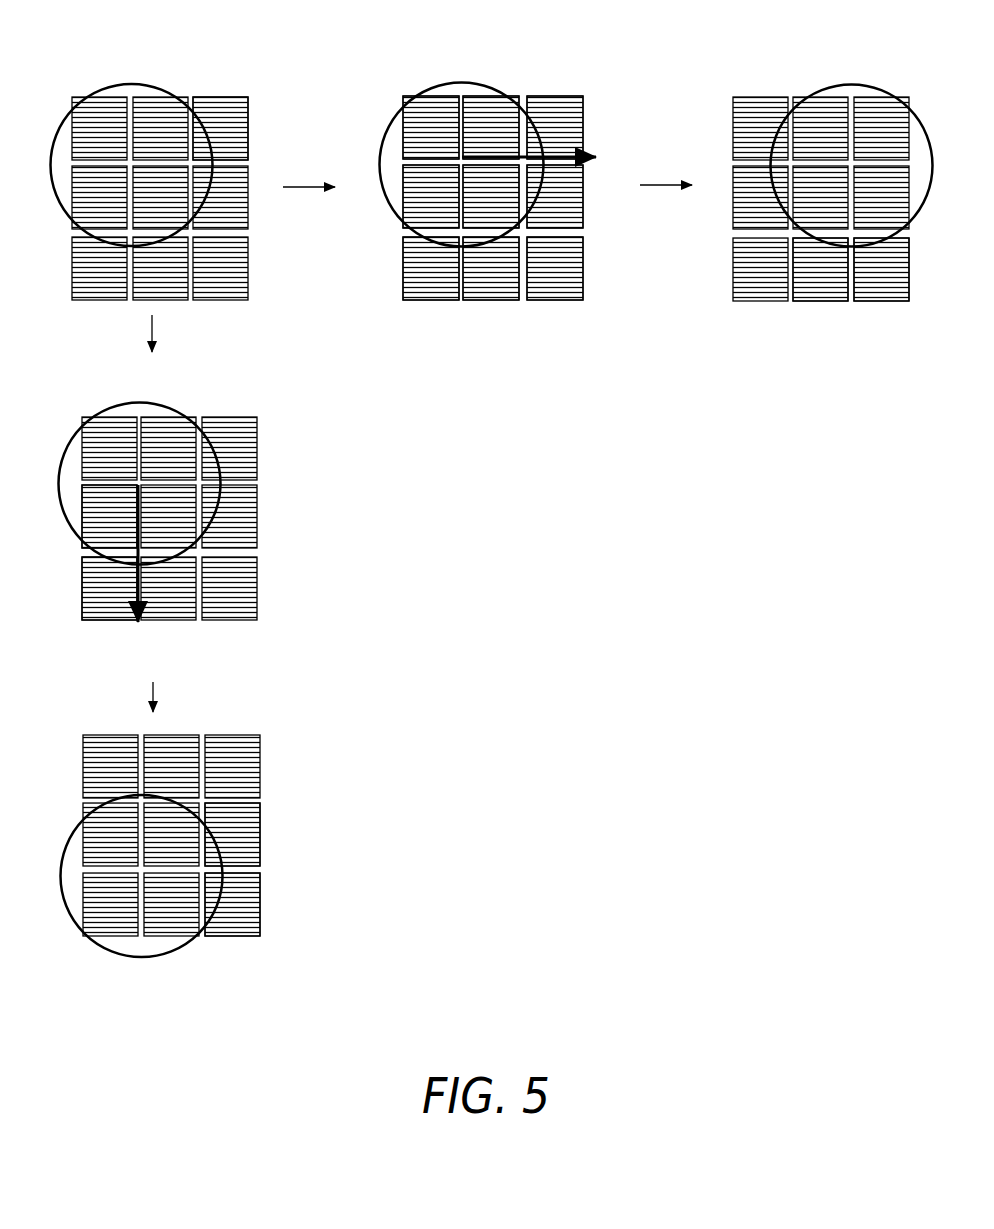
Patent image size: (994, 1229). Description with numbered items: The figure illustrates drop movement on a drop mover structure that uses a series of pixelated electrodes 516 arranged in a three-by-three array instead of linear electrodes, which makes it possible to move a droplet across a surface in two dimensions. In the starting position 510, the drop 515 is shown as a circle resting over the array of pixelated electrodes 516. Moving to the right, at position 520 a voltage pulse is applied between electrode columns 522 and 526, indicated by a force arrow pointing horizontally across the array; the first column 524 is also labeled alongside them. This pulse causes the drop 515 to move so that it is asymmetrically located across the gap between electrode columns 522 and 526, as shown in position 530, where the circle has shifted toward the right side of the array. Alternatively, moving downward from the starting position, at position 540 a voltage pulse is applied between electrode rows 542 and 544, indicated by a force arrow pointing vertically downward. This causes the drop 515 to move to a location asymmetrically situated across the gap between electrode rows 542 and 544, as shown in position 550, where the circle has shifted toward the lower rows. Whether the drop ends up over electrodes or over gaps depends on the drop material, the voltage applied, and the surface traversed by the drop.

The position 510 is at (106, 70).
The drop 515 is at (120, 82).
The pixelated electrodes 516 is at (227, 97).
The position 520 is at (427, 70).
The electrode column 522 is at (553, 300).
The first column tile 524 is at (432, 300).
The electrode column 526 is at (492, 300).
The position 530 is at (768, 82).
The position 540 is at (103, 395).
The electrode row 542 is at (82, 510).
The electrode row 544 is at (82, 582).
The position 550 is at (224, 712).